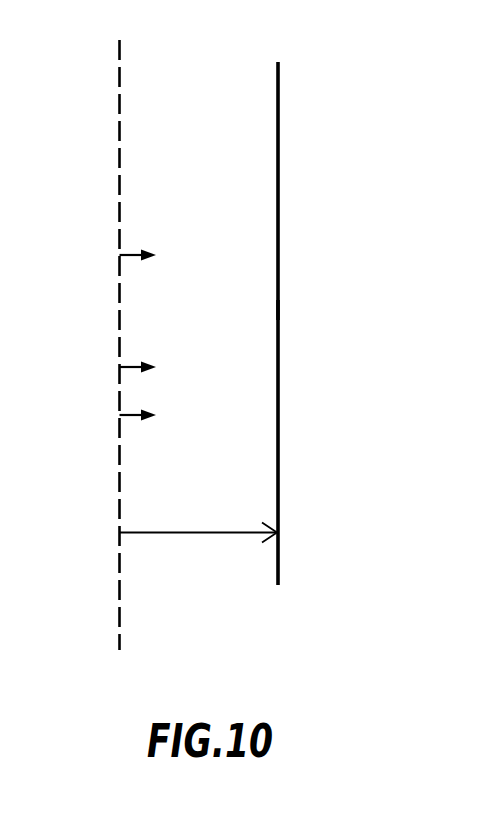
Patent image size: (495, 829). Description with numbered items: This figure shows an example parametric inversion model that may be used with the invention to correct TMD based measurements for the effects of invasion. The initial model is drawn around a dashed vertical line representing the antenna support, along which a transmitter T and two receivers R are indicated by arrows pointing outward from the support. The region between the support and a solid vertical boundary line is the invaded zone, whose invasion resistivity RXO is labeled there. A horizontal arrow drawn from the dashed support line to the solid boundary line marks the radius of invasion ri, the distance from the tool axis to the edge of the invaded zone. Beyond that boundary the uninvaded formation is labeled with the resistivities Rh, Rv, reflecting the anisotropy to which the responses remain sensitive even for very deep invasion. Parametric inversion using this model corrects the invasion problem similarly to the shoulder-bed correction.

The transmitter T is at (155, 263).
The receiver R is at (155, 403).
The invasion resistivity RXO is at (212, 317).
The horizontal formation resistivity Rh is at (340, 323).
The vertical formation resistivity Rv is at (368, 303).
The radius of invasion ri is at (199, 570).